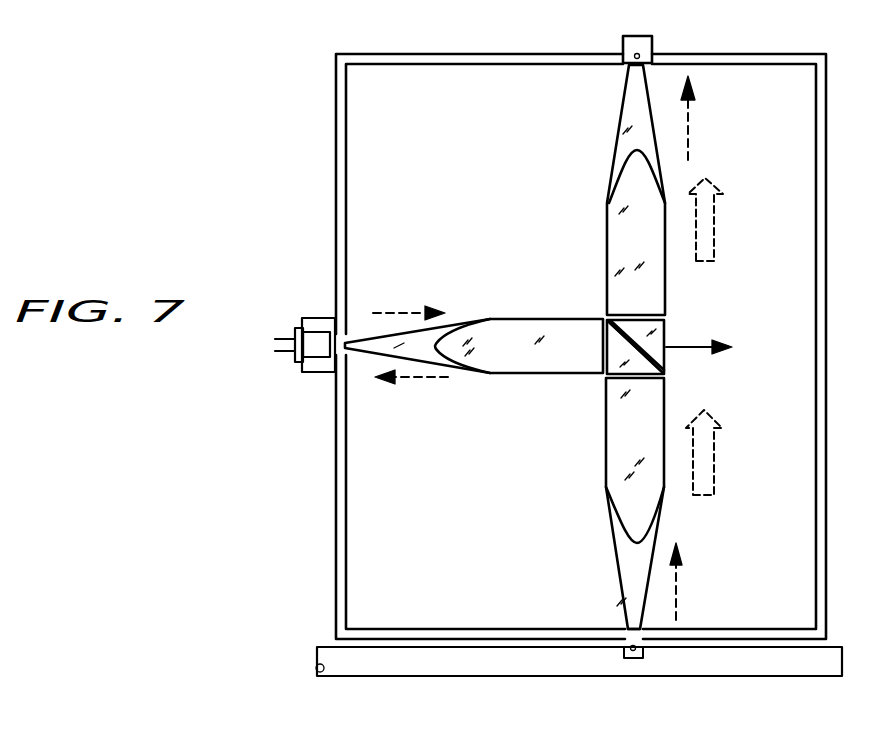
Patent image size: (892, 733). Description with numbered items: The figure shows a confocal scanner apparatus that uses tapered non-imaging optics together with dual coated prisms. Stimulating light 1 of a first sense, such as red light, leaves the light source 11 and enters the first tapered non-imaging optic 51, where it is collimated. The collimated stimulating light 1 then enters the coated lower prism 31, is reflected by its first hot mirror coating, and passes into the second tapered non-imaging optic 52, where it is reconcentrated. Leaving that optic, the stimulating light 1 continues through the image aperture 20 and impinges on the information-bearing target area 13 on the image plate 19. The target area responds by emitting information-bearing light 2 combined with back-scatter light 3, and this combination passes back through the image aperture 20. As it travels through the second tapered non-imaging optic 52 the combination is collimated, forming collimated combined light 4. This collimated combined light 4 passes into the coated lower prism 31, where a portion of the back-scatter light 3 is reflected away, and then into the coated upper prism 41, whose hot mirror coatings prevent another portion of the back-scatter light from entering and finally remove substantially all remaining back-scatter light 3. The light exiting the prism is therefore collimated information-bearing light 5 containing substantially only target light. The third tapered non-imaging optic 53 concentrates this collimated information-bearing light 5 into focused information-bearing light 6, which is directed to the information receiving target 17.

The stimulating light 1 is at (410, 312).
The information-bearing light 2 is at (681, 588).
The back-scatter light 3 is at (428, 378).
The collimated combined light 4 is at (715, 446).
The collimated information-bearing light 5 is at (715, 215).
The focused information-bearing light 6 is at (688, 125).
The light source 11 is at (312, 318).
The information-bearing target area 13 is at (633, 659).
The information receiving target 17 is at (653, 46).
The image plate 19 is at (562, 676).
The image aperture 20 is at (615, 618).
The coated lower prism 31 is at (604, 374).
The coated upper prism 41 is at (657, 359).
The first tapered non-imaging optic 51 is at (495, 366).
The second tapered non-imaging optic 52 is at (608, 467).
The third tapered non-imaging optic 53 is at (607, 254).